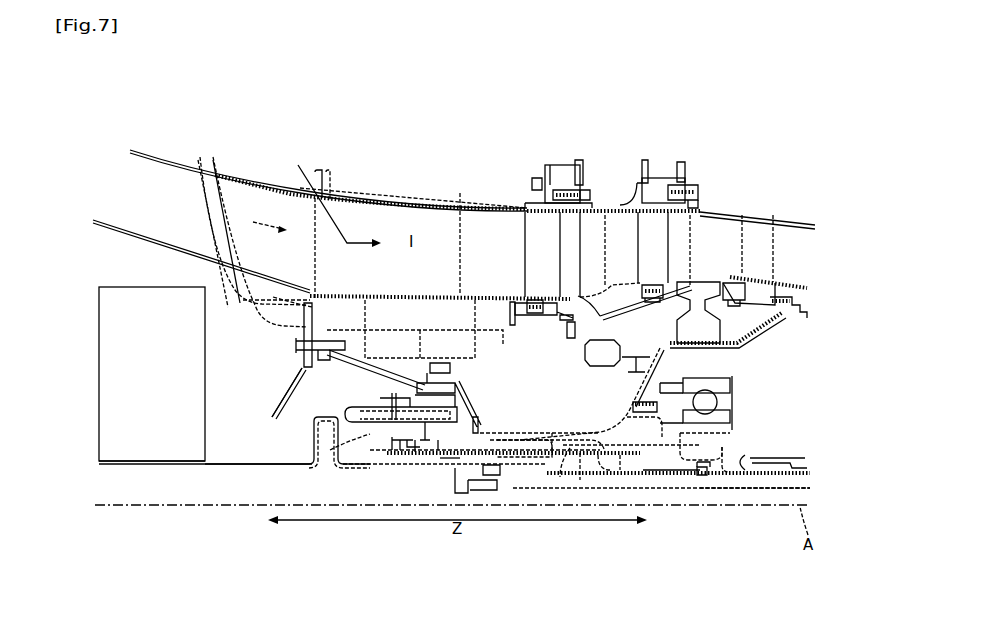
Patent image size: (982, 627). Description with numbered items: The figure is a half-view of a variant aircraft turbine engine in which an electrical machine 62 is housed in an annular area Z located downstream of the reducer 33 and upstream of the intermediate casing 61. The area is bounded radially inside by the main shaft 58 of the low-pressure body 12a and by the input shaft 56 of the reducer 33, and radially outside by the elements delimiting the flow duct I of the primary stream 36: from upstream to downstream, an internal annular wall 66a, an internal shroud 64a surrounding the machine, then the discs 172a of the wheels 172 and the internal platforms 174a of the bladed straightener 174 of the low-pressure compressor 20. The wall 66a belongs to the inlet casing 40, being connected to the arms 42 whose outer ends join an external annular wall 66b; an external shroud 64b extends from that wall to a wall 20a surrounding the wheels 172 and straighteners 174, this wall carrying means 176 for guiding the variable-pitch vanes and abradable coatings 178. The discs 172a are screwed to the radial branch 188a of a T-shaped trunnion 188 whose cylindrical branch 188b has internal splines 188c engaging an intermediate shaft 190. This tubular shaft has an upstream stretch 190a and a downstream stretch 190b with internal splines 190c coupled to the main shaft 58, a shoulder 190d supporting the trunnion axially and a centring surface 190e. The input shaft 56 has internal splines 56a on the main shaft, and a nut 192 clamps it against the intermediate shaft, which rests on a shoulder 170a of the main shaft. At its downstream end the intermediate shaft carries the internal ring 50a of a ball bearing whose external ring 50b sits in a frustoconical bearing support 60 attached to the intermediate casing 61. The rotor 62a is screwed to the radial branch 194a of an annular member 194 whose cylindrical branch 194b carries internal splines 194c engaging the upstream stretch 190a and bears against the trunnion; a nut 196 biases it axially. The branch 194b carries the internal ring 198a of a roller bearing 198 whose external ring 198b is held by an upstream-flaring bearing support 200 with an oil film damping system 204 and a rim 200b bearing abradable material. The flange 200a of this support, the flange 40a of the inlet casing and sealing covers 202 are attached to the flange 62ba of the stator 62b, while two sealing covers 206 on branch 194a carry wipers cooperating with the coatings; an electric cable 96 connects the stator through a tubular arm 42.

The low-pressure body 12a is at (762, 500).
The low-pressure compressor 20 is at (745, 163).
The wall 20a is at (560, 195).
The reducer 33 is at (84, 332).
The primary stream 36 is at (267, 215).
The inlet casing 40 is at (302, 136).
The flange of the inlet casing 40a is at (313, 290).
The arms 42 is at (157, 172).
The internal ring of the bearing 50a is at (735, 423).
The external ring of the bearing 50b is at (732, 387).
The input shaft 56 is at (133, 465).
The internal splines 56a is at (535, 475).
The main shaft 58 is at (648, 472).
The bearing support 60 is at (756, 338).
The intermediate casing 61 is at (823, 272).
The electrical machine 62 is at (447, 295).
The rotor 62a is at (372, 345).
The stator 62b is at (375, 345).
The flange of the stator 62ba is at (300, 300).
The internal shroud 64a is at (457, 235).
The external shroud 64b is at (372, 202).
The internal annular wall 66a is at (133, 228).
The external annular wall 66b is at (252, 180).
The electric cable 96 is at (215, 250).
The cylindrical shoulder 170a is at (760, 449).
The wheels 172 is at (606, 228).
The discs 172a is at (826, 262).
The bladed straightener 174 is at (524, 218).
The internal platforms 174a is at (580, 195).
The means for guiding in rotation 176 is at (535, 165).
The abradable annular coatings 178 is at (590, 188).
The trunnion 188 is at (614, 396).
The radial annular branch 188a is at (628, 358).
The cylindrical branch 188b is at (625, 462).
The internal splines 188c is at (697, 475).
The intermediate shaft 190 is at (737, 432).
The upstream stretch 190a is at (440, 450).
The downstream stretch 190b is at (598, 470).
The internal splines 190c is at (730, 455).
The cylindrical shoulder 190d is at (712, 414).
The external cylindrical surface 190e is at (588, 460).
The nut 192 is at (468, 480).
The annular member 194 is at (498, 402).
The radial annular branch 194a is at (440, 362).
The cylindrical branch 194b is at (518, 470).
The internal splines 194c is at (497, 492).
The nut 196 is at (372, 440).
The bearing 198 is at (338, 440).
The internal ring 198a is at (405, 450).
The external ring 198b is at (425, 452).
The bearing support 200 is at (365, 380).
The flange of the bearing support 200a is at (304, 346).
The cylindrical rim 200b is at (512, 300).
The sealing covers 202 is at (433, 345).
The oil film damping system 204 is at (293, 410).
The annular sealing covers 206 is at (452, 462).